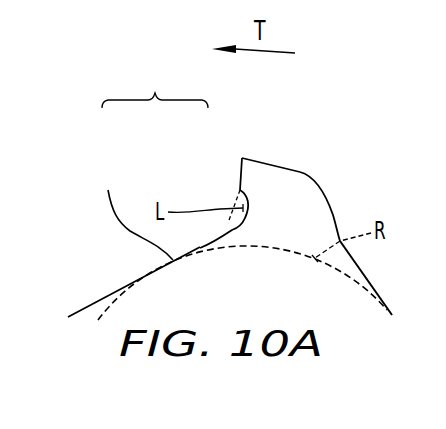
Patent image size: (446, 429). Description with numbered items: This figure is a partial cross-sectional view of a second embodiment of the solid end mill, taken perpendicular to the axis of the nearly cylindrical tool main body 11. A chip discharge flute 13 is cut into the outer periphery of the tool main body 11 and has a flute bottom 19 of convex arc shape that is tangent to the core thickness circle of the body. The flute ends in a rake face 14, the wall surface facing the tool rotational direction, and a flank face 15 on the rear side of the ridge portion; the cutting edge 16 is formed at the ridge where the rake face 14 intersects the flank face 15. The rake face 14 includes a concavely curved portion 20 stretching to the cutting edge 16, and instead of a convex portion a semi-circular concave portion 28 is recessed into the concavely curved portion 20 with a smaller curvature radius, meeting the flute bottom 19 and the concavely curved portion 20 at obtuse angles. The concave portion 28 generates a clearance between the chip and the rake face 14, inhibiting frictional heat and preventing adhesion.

The tool main body 11 is at (353, 182).
The chip discharge flute 13 is at (110, 271).
The rake face 14 is at (155, 84).
The flank face 15 is at (306, 173).
The cutting edge 16 is at (242, 157).
The flute bottom 19 is at (132, 208).
The concavely curved portion 20 is at (240, 173).
The concave portion 28 is at (236, 207).